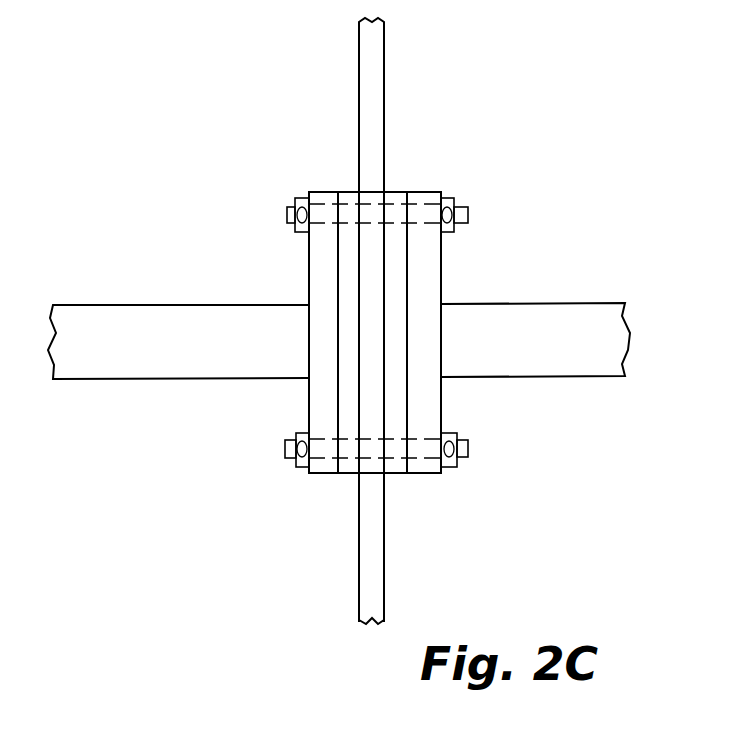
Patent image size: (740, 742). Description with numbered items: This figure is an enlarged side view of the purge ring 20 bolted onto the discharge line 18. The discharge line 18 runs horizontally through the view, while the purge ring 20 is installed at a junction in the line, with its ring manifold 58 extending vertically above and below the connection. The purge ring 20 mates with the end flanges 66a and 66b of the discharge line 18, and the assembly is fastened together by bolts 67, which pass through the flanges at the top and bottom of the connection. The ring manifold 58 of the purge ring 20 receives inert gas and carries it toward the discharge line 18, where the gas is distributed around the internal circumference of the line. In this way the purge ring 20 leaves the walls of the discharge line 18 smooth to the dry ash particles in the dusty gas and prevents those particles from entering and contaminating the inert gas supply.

The discharge line 18 is at (144, 329).
The ring manifold 58 is at (386, 51).
The purge ring 20 is at (385, 192).
The end flange 66a is at (320, 191).
The end flange 66b is at (425, 191).
The bolts 67 is at (284, 213).